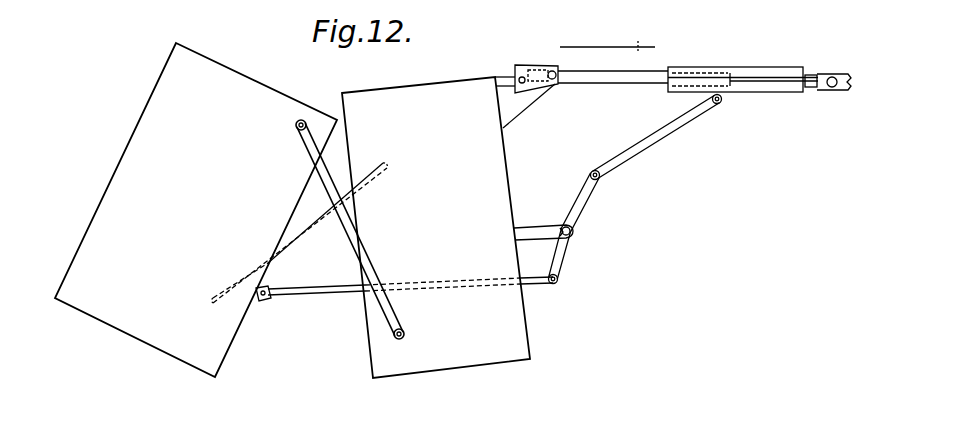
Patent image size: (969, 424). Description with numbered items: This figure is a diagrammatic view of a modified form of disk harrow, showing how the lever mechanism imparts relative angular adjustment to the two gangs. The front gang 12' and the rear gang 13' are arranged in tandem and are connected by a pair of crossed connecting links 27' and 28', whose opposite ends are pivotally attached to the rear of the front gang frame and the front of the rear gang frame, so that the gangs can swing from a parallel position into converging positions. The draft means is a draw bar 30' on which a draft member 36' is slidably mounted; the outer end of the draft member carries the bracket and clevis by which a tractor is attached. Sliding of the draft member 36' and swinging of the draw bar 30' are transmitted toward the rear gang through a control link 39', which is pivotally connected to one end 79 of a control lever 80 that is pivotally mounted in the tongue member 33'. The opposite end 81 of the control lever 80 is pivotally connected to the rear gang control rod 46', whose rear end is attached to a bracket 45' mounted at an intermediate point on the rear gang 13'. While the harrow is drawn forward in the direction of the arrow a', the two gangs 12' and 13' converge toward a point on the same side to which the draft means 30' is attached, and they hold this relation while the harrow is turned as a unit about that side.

The front gang 12' is at (459, 227).
The rear gang 13' is at (196, 223).
The connecting link 27' is at (350, 229).
The connecting link 28' is at (300, 233).
The draw bar 30' is at (585, 104).
The tongue member 33' is at (543, 245).
The draft member 36' is at (759, 63).
The control link 39' is at (657, 137).
The bracket 45' is at (266, 310).
The rear gang control rod 46' is at (410, 302).
The end of control lever 79 is at (596, 170).
The control lever 80 is at (583, 205).
The opposite end of control lever 81 is at (558, 279).
The arrow A' a' is at (607, 40).